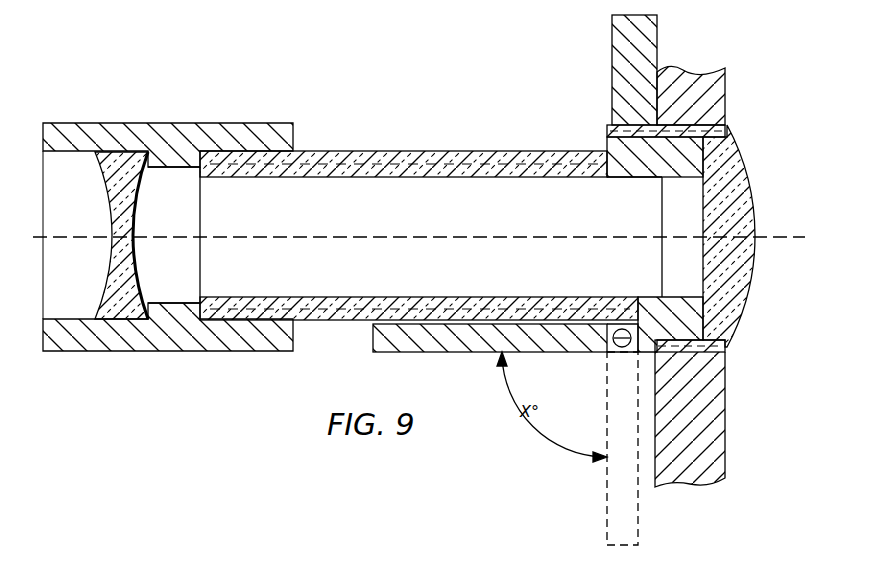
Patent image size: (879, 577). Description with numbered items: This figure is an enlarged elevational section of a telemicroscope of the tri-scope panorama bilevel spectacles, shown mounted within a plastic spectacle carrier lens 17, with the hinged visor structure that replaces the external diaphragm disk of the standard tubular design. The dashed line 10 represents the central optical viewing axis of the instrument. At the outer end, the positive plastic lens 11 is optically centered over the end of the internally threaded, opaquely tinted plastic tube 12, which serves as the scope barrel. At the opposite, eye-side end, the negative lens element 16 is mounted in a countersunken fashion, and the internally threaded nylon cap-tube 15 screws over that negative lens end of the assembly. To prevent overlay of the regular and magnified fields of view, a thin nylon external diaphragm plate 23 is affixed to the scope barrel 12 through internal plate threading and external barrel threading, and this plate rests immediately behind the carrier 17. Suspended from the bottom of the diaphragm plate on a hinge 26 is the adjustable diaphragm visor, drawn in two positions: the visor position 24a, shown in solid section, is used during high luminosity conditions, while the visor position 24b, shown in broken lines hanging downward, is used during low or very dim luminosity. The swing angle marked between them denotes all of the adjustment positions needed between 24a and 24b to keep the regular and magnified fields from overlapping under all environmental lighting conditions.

The central optical viewing axis 10 is at (777, 237).
The positive plastic lens 11 is at (747, 187).
The plastic tube 12 is at (607, 137).
The nylon cap-tube 15 is at (203, 352).
The negative lens element 16 is at (105, 186).
The plastic spectacle carrier lens 17 is at (725, 427).
The external diaphragm plate 23 is at (658, 50).
The visor position 24a is at (427, 353).
The visor position 24b is at (605, 497).
The hinge 26 is at (605, 355).